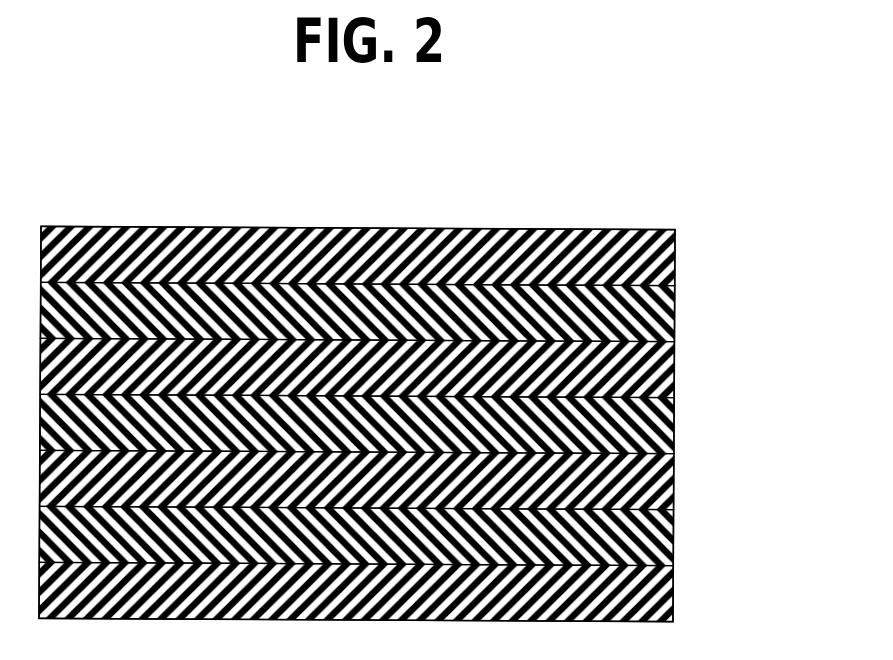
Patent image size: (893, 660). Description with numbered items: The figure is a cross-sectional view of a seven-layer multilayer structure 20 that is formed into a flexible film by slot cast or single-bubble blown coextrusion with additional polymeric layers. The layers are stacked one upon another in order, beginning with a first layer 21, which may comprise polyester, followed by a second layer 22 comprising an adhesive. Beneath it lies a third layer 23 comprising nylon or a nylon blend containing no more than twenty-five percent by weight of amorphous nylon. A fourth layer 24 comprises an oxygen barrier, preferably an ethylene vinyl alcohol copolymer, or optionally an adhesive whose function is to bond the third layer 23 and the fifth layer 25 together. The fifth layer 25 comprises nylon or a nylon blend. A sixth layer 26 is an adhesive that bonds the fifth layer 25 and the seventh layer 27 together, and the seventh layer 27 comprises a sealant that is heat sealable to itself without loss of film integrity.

The multilayer structure 20 is at (404, 216).
The first layer 21 is at (704, 258).
The second layer 22 is at (704, 314).
The third layer 23 is at (704, 370).
The fourth layer 24 is at (704, 426).
The fifth layer 25 is at (704, 482).
The sixth layer 26 is at (704, 538).
The seventh layer 27 is at (704, 594).